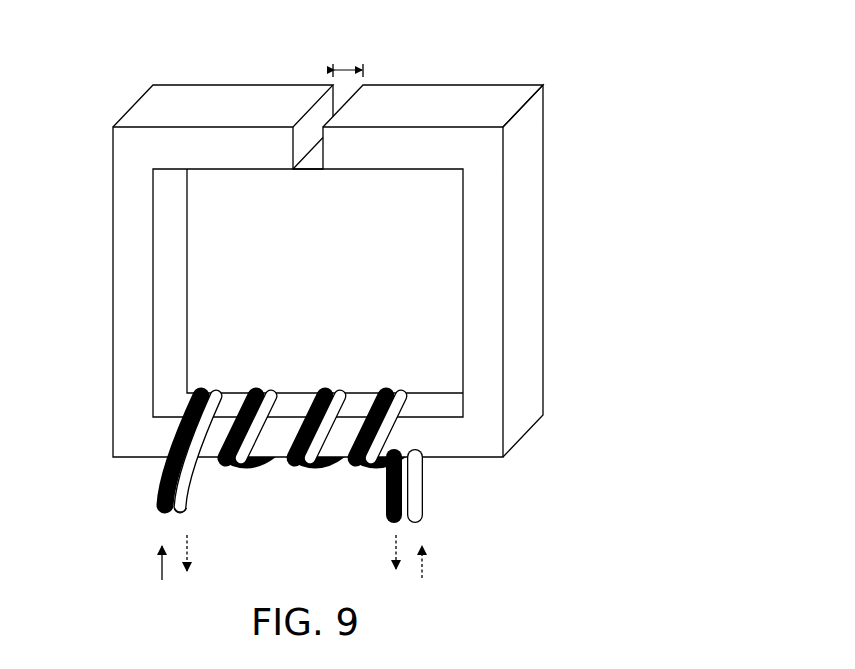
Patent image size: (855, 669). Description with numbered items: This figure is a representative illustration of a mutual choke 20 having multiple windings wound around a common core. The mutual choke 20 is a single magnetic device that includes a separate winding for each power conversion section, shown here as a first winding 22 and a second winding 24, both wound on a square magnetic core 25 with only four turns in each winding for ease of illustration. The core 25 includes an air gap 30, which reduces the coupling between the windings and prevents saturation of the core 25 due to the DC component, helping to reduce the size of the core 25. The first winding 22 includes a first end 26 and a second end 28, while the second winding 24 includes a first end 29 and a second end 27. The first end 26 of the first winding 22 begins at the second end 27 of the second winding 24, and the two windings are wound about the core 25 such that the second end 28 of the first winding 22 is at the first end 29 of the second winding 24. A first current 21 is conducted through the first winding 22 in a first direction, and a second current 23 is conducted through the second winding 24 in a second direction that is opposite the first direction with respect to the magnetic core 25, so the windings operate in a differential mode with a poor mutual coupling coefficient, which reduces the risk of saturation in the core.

The mutual choke 20 is at (580, 93).
The first current 21 is at (160, 568).
The first winding 22 is at (156, 487).
The second current 23 is at (193, 557).
The second winding 24 is at (187, 488).
The magnetic core 25 is at (525, 286).
The first end of the first winding 26 is at (160, 513).
The second end of the second winding 27 is at (184, 514).
The second end of the first winding 28 is at (385, 522).
The first end of the second winding 29 is at (423, 523).
The air gap 30 is at (351, 58).